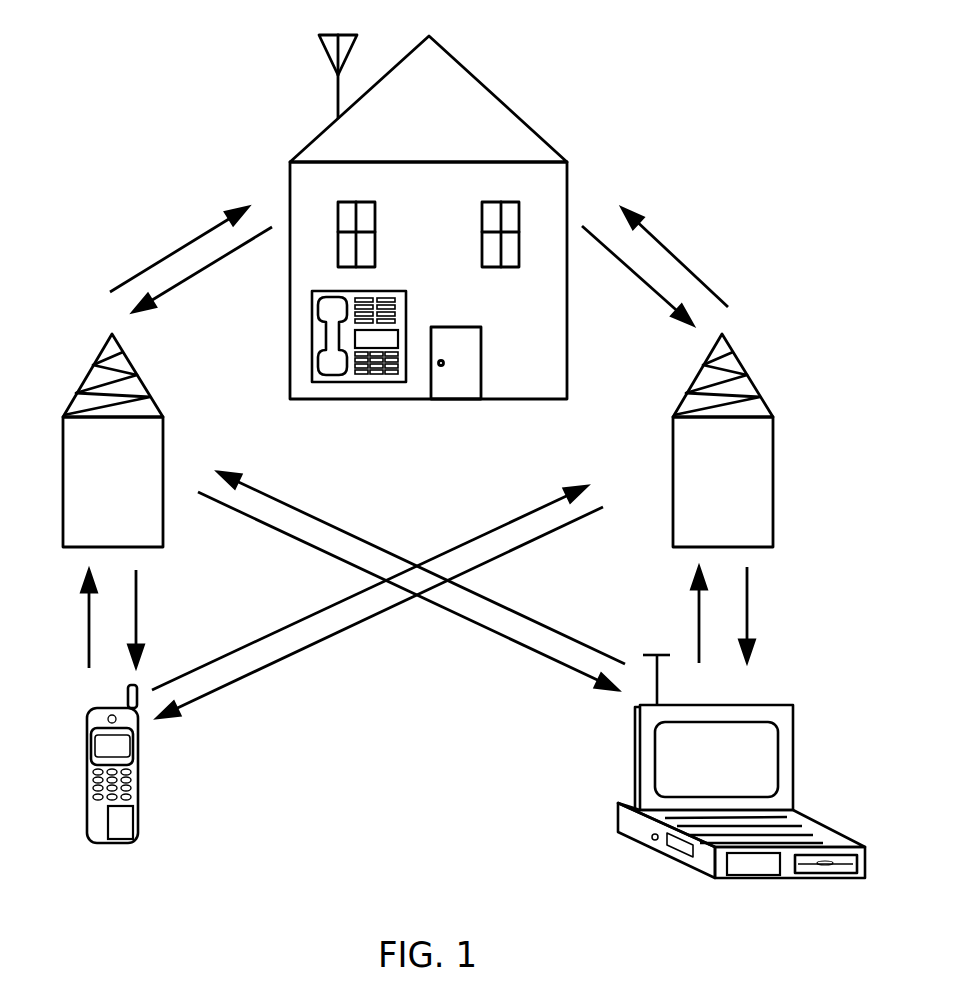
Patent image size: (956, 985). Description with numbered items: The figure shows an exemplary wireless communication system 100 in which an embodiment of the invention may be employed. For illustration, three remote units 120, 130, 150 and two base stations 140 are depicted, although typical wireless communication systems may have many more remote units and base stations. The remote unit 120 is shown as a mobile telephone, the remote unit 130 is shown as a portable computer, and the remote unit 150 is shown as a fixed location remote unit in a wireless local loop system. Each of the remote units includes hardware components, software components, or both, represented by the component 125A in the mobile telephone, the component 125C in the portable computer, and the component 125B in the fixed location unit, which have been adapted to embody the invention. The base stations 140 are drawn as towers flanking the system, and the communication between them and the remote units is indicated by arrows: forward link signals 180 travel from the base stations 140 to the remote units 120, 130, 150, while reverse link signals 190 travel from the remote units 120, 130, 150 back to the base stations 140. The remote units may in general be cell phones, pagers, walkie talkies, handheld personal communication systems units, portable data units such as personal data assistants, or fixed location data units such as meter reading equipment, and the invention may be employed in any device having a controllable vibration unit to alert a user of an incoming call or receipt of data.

The wireless communication system 100 is at (122, 69).
The remote unit 120 is at (88, 722).
The component 125A is at (123, 827).
The component 125B is at (385, 335).
The component 125C is at (760, 863).
The remote unit 130 is at (770, 705).
The base station 140 is at (88, 375).
The remote unit 150 is at (312, 345).
The forward link signals 180 is at (183, 246).
The reverse link signals 190 is at (190, 278).